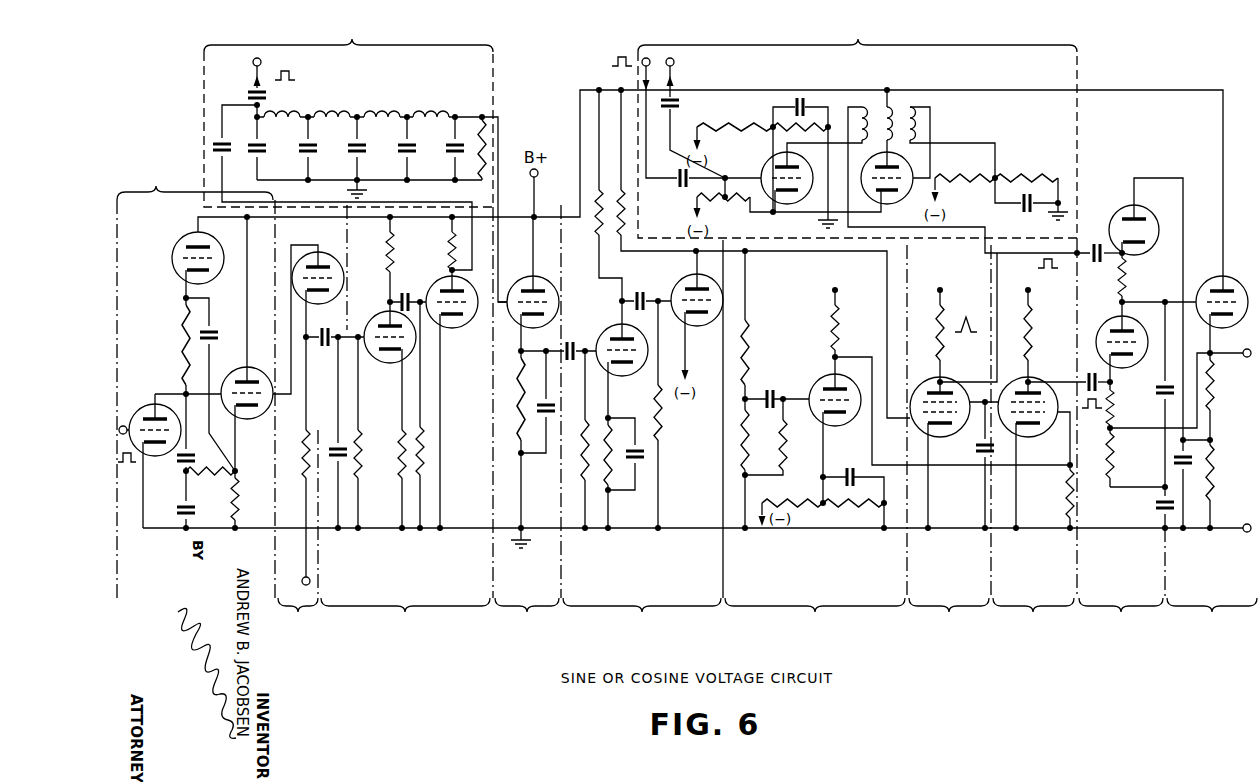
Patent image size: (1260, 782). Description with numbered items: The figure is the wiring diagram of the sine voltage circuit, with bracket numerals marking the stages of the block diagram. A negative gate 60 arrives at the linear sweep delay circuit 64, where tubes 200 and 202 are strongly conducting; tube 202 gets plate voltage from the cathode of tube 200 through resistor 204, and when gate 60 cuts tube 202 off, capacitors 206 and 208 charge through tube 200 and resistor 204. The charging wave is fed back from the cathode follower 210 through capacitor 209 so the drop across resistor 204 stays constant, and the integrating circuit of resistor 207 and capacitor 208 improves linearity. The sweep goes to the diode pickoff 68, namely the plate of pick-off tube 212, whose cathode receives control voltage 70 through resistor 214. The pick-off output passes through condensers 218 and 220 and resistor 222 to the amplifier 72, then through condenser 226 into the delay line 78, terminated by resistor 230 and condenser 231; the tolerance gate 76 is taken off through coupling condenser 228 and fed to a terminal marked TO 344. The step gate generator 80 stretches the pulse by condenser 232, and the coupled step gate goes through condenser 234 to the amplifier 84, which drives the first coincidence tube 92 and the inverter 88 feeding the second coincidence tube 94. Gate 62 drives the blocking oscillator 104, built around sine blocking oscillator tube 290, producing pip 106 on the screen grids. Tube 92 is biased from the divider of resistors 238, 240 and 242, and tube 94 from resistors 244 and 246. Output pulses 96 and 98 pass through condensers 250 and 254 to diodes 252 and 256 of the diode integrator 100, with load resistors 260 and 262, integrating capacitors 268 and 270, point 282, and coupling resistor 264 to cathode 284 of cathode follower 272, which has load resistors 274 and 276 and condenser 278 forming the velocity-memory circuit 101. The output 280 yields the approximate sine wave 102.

The negative 600 microsecond gate 60 is at (129, 465).
The 600 microsecond gate 62 is at (622, 54).
The linear sweep delay circuit 64 is at (196, 380).
The diode pickoff 68 is at (298, 621).
The control voltage 70 is at (300, 562).
The amplifier 72 is at (405, 621).
The narrow tolerance gate 76 is at (274, 74).
The delay line 78 is at (357, 117).
The step gate generator 80 is at (520, 270).
The amplifier 84 is at (642, 621).
The inverter 88 is at (815, 621).
The first coincidence tube 92 is at (924, 372).
The second coincidence tube 94 is at (1045, 372).
The output pulse 96 is at (1056, 270).
The output pulse 98 is at (1086, 410).
The diode integrator 100 is at (1121, 621).
The velocity-memory circuit 101 is at (1212, 621).
The approximate sine wave 102 is at (1245, 358).
The blocking oscillator 104 is at (857, 128).
The pip 106 is at (958, 322).
The tube 200 is at (174, 251).
The tube 202 is at (146, 408).
The resistor 204 is at (184, 334).
The capacitor 206 is at (194, 456).
The resistor 207 is at (232, 478).
The capacitor 208 is at (180, 510).
The capacitor 209 is at (212, 334).
The cathode follower 210 is at (256, 376).
The diode pick-off tube 212 is at (323, 260).
The resistor 214 is at (304, 440).
The condenser 218 is at (342, 326).
The condenser 220 is at (334, 456).
The resistor 222 is at (362, 440).
The condenser 226 is at (214, 146).
The coupling condenser 228 is at (250, 94).
The terminating resistor 230 is at (478, 116).
The condenser 231 is at (446, 148).
The condenser 232 is at (532, 410).
The coupling capacitor 234 is at (580, 344).
The resistor 238 is at (606, 276).
The resistor 240 is at (748, 360).
The resistor 242 is at (748, 446).
The resistor 244 is at (840, 326).
The resistor 246 is at (1071, 482).
The condenser 250 is at (1097, 260).
The diode 252 is at (1114, 218).
The condenser 254 is at (1092, 378).
The diode 256 is at (1106, 330).
The load resistor 260 is at (1126, 278).
The resistor 262 is at (1110, 404).
The resistor 264 is at (1114, 446).
The integrating capacitor 268 is at (1162, 390).
The integrating capacitor 270 is at (1156, 506).
The cathode follower 272 is at (1208, 289).
The load resistor 274 is at (1216, 404).
The load resistor 276 is at (1214, 474).
The condenser 278 is at (1206, 460).
The output point 280 is at (1164, 302).
The point 282 is at (1164, 486).
The cathode point 284 is at (1222, 351).
The sine blocking oscillator 290 is at (762, 172).
The connection to 344 is at (693, 99).